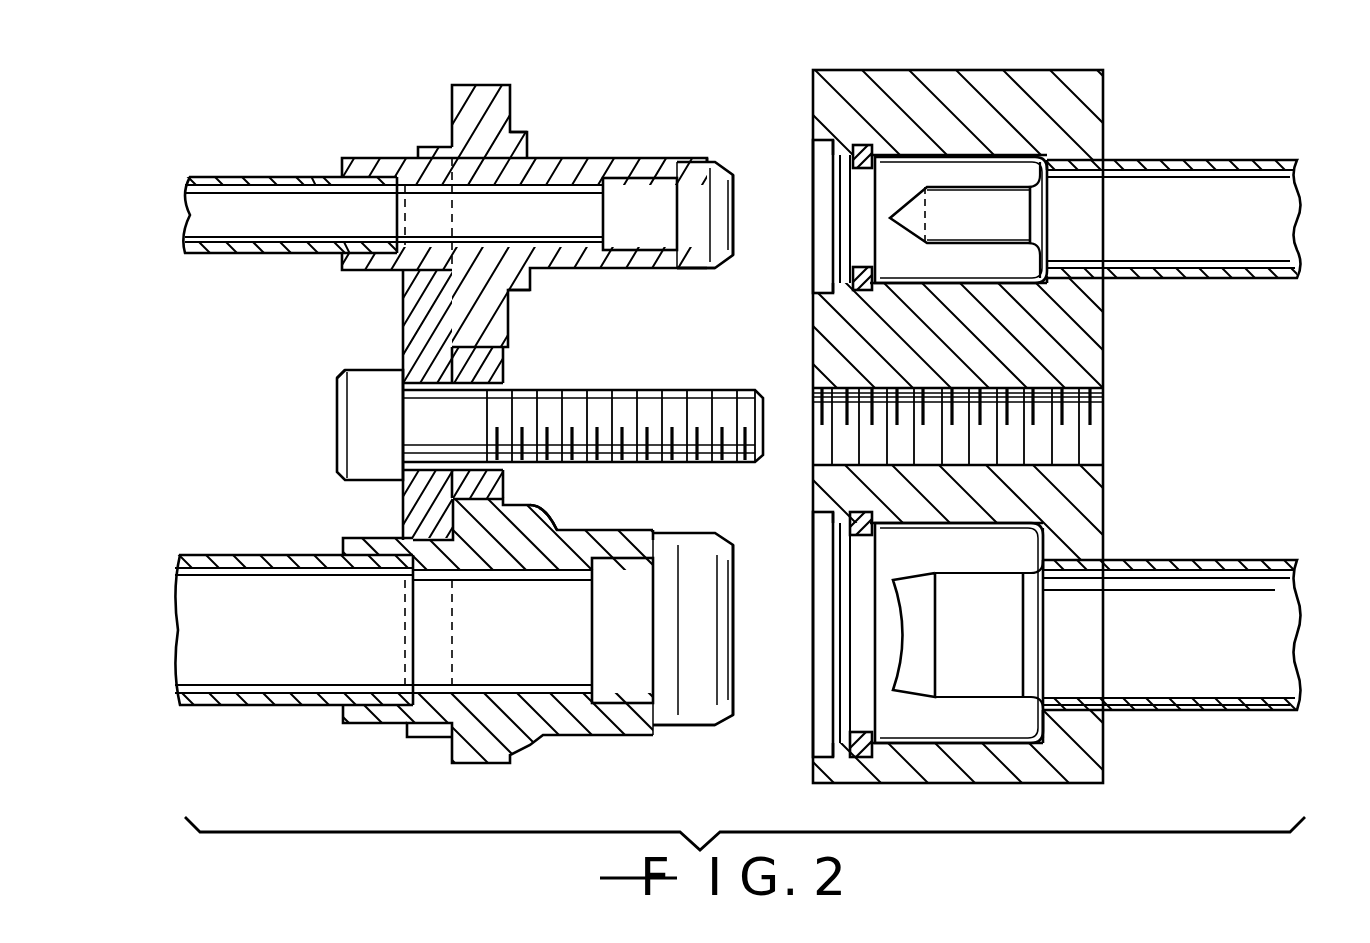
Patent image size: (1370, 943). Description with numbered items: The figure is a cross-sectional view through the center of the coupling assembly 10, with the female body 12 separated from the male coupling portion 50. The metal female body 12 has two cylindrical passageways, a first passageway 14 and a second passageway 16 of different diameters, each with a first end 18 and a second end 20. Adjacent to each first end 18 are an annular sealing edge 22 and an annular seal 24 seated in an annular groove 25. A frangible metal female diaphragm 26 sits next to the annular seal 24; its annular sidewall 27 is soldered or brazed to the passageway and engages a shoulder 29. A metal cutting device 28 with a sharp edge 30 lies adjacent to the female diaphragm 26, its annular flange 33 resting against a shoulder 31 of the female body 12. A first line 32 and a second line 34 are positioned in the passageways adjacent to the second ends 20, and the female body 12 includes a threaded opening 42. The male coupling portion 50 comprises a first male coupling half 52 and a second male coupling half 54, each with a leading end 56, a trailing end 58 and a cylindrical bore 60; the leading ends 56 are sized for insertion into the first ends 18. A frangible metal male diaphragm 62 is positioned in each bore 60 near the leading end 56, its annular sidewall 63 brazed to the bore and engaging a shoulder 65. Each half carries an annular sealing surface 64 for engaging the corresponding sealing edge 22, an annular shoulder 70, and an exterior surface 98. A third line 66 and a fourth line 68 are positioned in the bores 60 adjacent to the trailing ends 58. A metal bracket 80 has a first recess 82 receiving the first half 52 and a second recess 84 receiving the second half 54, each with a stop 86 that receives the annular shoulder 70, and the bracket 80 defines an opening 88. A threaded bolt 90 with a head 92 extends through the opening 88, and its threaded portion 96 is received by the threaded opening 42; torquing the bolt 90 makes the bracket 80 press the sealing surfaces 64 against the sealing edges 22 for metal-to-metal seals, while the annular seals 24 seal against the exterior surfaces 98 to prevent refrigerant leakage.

The coupling assembly 10 is at (685, 418).
The female body 12 is at (1102, 72).
The first passageway 14 is at (978, 152).
The second passageway 16 is at (1042, 530).
The first end 18 is at (833, 148).
The second end 20 is at (1095, 162).
The annular sealing edge 22 is at (815, 292).
The annular seal 24 is at (863, 145).
The annular groove 25 is at (842, 150).
The female diaphragm 26 is at (905, 160).
The annular sidewall 27 is at (905, 230).
The cutting device 28 is at (1035, 158).
The shoulder 29 is at (975, 265).
The sharp edge 30 is at (838, 170).
The shoulder 31 is at (1070, 270).
The first line 32 is at (1270, 160).
The annular flange 33 is at (1052, 290).
The second line 34 is at (1270, 562).
The threaded opening 42 is at (1103, 405).
The male coupling portion 50 is at (453, 85).
The first male coupling half 52 is at (515, 86).
The second male coupling half 54 is at (455, 762).
The leading end 56 is at (725, 165).
The trailing end 58 is at (345, 158).
The cylindrical bore 60 is at (562, 245).
The male diaphragm 62 is at (735, 215).
The annular sidewall 63 is at (680, 195).
The annular sealing surface 64 is at (528, 140).
The shoulder 65 is at (690, 270).
The third line 66 is at (225, 255).
The fourth line 68 is at (205, 555).
The annular shoulder 70 is at (440, 300).
The bracket 80 is at (405, 372).
The first recess 82 is at (455, 250).
The second recess 84 is at (455, 590).
The stop 86 is at (520, 320).
The opening 88 is at (440, 345).
The threaded bolt 90 is at (337, 380).
The head 92 is at (345, 428).
The threaded portion 96 is at (660, 390).
The exterior surfaces 98 is at (640, 160).